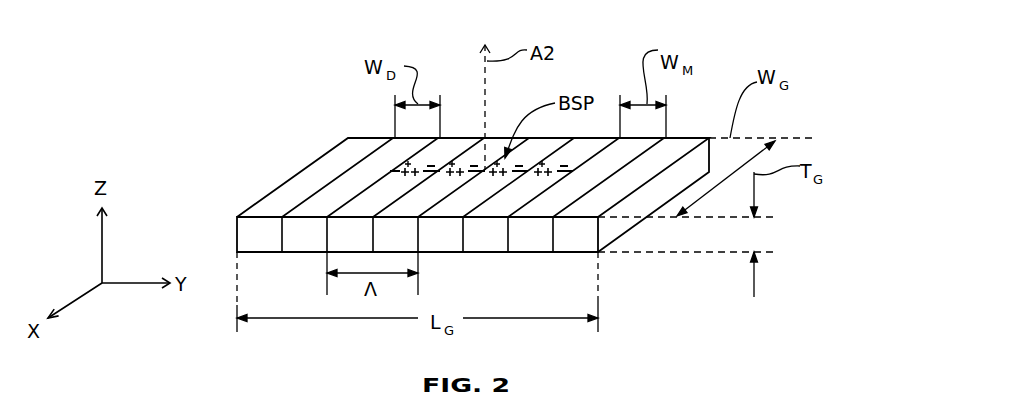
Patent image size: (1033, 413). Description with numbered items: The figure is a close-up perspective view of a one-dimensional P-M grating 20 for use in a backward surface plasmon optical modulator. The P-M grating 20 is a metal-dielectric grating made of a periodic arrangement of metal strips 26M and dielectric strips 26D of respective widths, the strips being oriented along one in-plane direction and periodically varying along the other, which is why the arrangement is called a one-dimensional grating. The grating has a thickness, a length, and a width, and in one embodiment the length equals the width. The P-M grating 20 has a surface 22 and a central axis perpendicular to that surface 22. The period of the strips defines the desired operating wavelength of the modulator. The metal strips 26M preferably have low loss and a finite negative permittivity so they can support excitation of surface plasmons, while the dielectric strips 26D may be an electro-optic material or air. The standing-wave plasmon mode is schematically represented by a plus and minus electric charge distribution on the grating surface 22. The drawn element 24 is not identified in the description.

The P-M grating 20 is at (237, 50).
The surface 22 is at (666, 157).
The substrate 24 is at (532, 257).
The metal strips 26M is at (432, 157).
The dielectric strips 26D is at (410, 205).